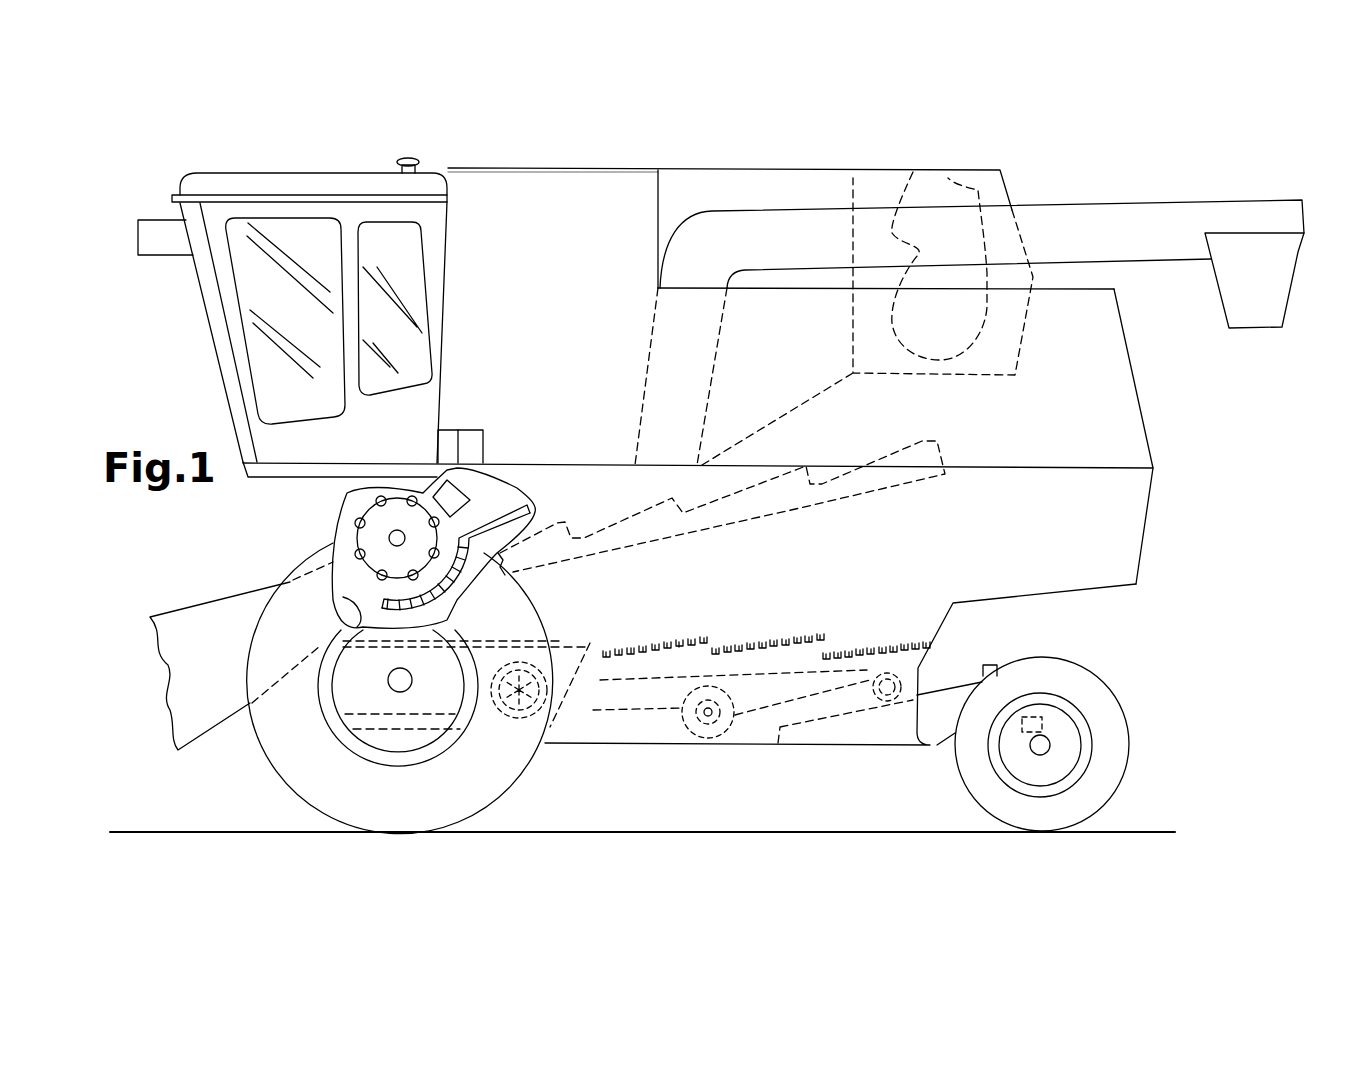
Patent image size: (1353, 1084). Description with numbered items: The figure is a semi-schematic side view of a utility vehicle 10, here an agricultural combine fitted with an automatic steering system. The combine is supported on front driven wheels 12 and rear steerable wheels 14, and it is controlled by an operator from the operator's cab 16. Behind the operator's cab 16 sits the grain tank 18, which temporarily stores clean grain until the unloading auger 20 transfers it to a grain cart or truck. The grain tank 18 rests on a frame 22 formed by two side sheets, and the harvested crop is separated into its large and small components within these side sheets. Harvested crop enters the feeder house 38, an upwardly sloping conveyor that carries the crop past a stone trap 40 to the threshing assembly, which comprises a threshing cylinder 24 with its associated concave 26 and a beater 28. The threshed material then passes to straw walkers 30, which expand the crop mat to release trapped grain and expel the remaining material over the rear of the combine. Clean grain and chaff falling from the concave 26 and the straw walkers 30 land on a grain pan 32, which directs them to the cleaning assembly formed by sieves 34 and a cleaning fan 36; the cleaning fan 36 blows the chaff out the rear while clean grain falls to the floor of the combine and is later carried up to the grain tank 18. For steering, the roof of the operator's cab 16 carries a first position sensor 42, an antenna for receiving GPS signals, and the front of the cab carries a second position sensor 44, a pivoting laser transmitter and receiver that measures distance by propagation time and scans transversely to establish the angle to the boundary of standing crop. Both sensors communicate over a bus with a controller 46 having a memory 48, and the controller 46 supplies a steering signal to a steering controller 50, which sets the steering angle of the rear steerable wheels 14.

The utility vehicle 10 is at (807, 165).
The front driven wheels 12 is at (402, 812).
The rear steerable wheels 14 is at (1038, 817).
The operator's cab 16 is at (215, 187).
The grain tank 18 is at (562, 167).
The unloading auger 20 is at (1075, 200).
The frame 22 is at (893, 565).
The threshing cylinder 24 is at (368, 525).
The concave 26 is at (470, 575).
The beater 28 is at (510, 495).
The straw walkers 30 is at (907, 445).
The grain pan 32 is at (591, 643).
The sieves 34 is at (758, 640).
The cleaning fan 36 is at (514, 748).
The feeder house 38 is at (172, 620).
The stone trap 40 is at (290, 598).
The first position sensor 42 is at (405, 160).
The second position sensor 44 is at (163, 240).
The controller 46 is at (443, 432).
The memory 48 is at (472, 430).
The steering controller 50 is at (1035, 720).